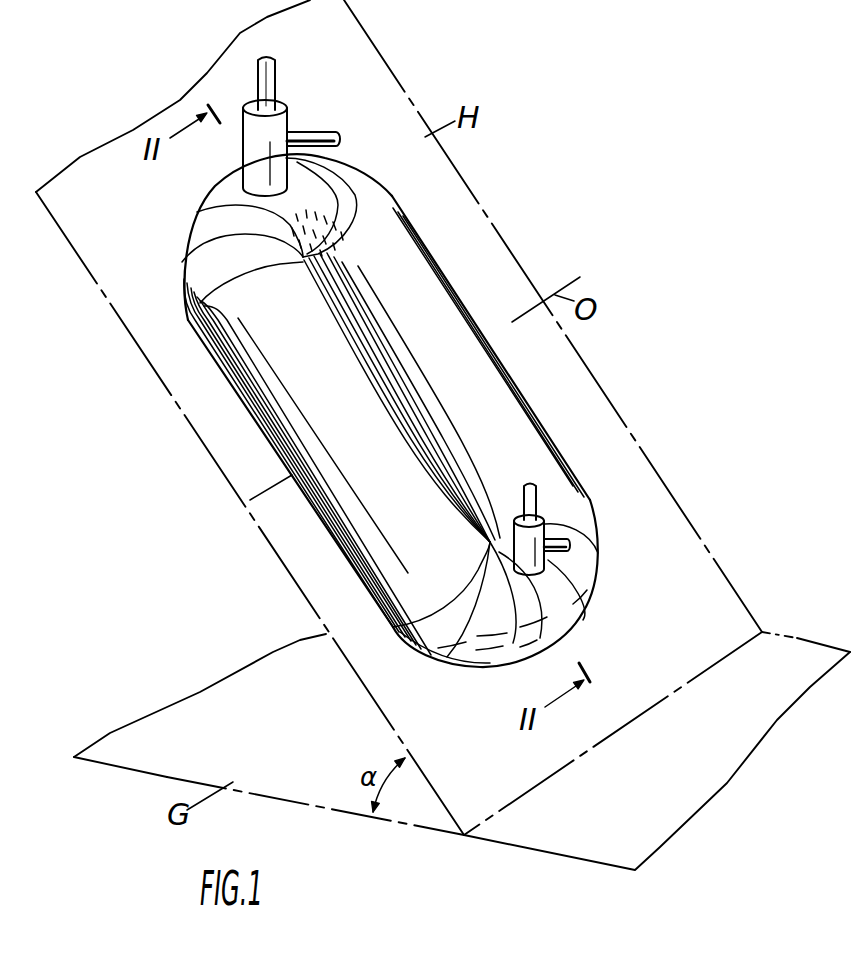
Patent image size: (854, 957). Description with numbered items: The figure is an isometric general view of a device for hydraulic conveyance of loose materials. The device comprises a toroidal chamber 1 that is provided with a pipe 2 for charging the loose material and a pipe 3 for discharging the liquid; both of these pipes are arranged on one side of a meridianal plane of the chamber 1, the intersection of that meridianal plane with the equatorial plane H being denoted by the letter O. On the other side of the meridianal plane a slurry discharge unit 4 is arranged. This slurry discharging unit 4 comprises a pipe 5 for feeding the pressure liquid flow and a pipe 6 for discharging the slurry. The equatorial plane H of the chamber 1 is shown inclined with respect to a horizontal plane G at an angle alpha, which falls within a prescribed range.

The toroidal chamber 1 is at (275, 410).
The pipe for charging the loose material 2 is at (258, 69).
The pipe for discharging the liquid 3 is at (313, 132).
The slurry discharge unit 4 is at (555, 505).
The pipe for feeding the pressure liquid flow 5 is at (567, 547).
The pipe for discharging the slurry 6 is at (537, 485).